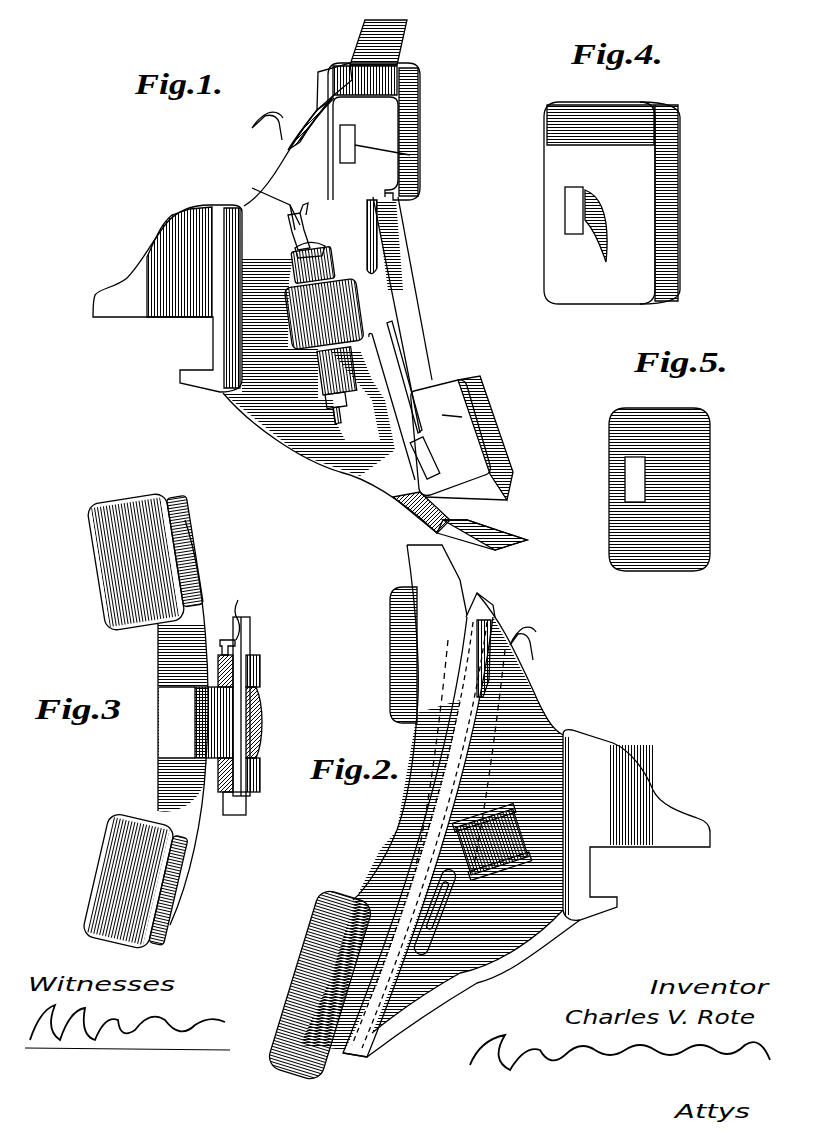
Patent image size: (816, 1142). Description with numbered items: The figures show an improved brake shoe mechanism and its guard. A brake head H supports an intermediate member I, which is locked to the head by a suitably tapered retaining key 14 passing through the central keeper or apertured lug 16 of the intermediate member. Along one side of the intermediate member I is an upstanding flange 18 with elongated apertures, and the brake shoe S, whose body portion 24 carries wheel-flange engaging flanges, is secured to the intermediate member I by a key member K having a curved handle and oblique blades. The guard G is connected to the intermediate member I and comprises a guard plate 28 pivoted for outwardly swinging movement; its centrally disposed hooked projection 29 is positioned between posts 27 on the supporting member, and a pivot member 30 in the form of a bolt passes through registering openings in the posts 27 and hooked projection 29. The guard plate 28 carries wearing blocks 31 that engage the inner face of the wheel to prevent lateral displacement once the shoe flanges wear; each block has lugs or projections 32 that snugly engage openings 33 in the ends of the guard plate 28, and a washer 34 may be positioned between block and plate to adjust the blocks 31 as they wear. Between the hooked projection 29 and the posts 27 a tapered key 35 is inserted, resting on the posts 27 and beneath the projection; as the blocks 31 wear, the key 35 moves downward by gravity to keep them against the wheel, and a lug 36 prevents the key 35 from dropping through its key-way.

In FIG. 1, the intermediate member I is at (336, 68).
In FIG. 2, the intermediate member I is at (478, 593).
In FIG. 1, the brake shoe S is at (410, 30).
In FIG. 2, the brake shoe S is at (410, 722).
In FIG. 1, the brake head H is at (262, 180).
In FIG. 2, the brake head H is at (560, 730).
In FIG. 1, the guard G is at (405, 133).
In FIG. 3, the guard G is at (158, 772).
In FIG. 2, the key member K is at (435, 822).
In FIG. 1, the retaining key 14 is at (277, 116).
In FIG. 2, the retaining key 14 is at (534, 640).
In FIG. 2, the central keeper or apertured lug 16 is at (522, 832).
In FIG. 2, the upstanding flange 18 is at (490, 622).
In FIG. 2, the body portion 24 is at (420, 745).
In FIG. 1, the posts 27 is at (293, 260).
In FIG. 3, the posts 27 is at (260, 685).
In FIG. 1, the guard plate 28 is at (462, 417).
In FIG. 1, the hooked projection 29 is at (310, 312).
In FIG. 3, the hooked projection 29 is at (262, 735).
In FIG. 1, the pivot member 30 is at (296, 246).
In FIG. 3, the pivot member 30 is at (250, 645).
In FIG. 1, the wearing blocks 31 is at (422, 96).
In FIG. 4, the wearing blocks 31 is at (625, 203).
In FIG. 3, the wearing blocks 31 is at (104, 624).
In FIG. 2, the wearing blocks 31 is at (390, 665).
In FIG. 1, the lugs or projections 32 is at (340, 145).
In FIG. 4, the lugs or projections 32 is at (565, 217).
In FIG. 1, the openings 33 is at (410, 155).
In FIG. 5, the washer 34 is at (712, 496).
In FIG. 1, the key 35 is at (252, 188).
In FIG. 3, the key 35 is at (250, 622).
In FIG. 1, the lug 36 is at (302, 210).
In FIG. 3, the lug 36 is at (238, 609).